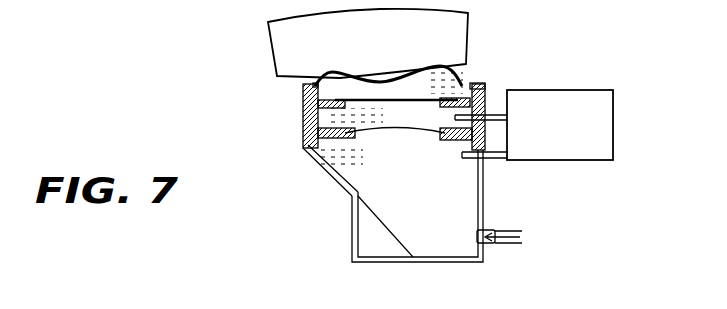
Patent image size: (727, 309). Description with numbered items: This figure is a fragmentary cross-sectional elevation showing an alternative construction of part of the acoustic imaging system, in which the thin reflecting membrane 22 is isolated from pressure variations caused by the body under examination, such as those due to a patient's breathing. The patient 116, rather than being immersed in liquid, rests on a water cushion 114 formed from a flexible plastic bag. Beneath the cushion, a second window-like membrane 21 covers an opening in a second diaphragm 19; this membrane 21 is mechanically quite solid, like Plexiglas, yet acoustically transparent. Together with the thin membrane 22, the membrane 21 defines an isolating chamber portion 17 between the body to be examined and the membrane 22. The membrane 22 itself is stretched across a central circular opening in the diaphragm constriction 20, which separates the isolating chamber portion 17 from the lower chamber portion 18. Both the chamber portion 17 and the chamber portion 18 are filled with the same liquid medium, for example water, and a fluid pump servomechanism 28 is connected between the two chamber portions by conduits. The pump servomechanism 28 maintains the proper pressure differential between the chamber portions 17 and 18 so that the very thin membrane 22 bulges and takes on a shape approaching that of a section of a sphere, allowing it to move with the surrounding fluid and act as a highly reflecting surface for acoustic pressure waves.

The patient 116 is at (372, 59).
The second diaphragm 19 is at (338, 97).
The water cushion 114 is at (460, 76).
The second window-like membrane 21 is at (303, 113).
The isolating chamber portion 17 is at (428, 120).
The thin membrane 22 is at (382, 133).
The diaphragm constriction 20 is at (305, 151).
The chamber portion 18 is at (420, 210).
The fluid pump servomechanism 28 is at (546, 90).